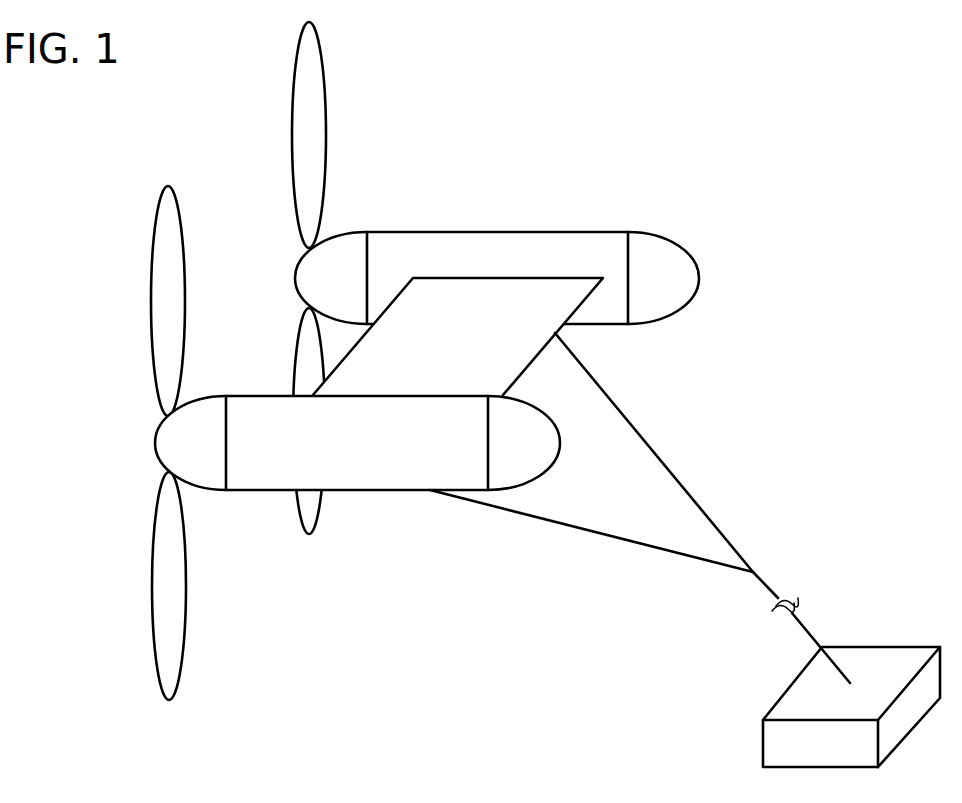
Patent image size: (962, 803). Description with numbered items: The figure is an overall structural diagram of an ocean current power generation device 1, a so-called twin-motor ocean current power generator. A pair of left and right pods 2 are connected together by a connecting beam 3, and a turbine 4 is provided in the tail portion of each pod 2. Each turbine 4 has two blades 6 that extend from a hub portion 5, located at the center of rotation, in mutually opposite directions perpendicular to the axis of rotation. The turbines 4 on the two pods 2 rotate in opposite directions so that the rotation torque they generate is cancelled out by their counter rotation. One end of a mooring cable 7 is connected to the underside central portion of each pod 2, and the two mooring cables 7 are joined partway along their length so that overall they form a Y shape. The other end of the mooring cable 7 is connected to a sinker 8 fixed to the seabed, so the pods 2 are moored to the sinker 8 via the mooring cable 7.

The ocean current power generation device 1 is at (712, 151).
The pod 2 is at (562, 243).
The connecting beam 3 is at (481, 308).
The turbine 4 is at (270, 236).
The hub portion 5 is at (317, 290).
The blade 6 is at (312, 82).
The mooring cable 7 is at (673, 470).
The sinker 8 is at (872, 665).